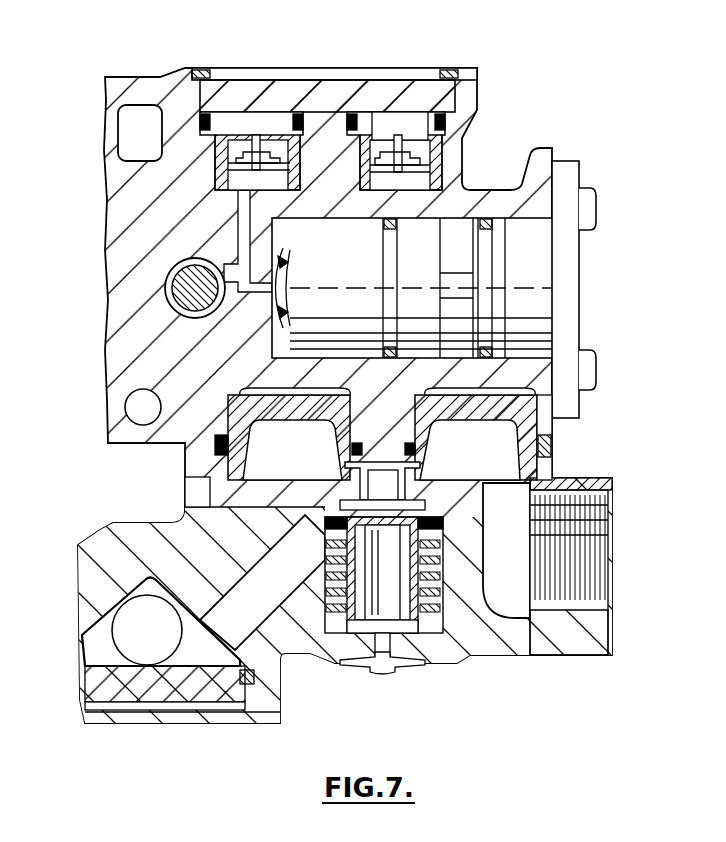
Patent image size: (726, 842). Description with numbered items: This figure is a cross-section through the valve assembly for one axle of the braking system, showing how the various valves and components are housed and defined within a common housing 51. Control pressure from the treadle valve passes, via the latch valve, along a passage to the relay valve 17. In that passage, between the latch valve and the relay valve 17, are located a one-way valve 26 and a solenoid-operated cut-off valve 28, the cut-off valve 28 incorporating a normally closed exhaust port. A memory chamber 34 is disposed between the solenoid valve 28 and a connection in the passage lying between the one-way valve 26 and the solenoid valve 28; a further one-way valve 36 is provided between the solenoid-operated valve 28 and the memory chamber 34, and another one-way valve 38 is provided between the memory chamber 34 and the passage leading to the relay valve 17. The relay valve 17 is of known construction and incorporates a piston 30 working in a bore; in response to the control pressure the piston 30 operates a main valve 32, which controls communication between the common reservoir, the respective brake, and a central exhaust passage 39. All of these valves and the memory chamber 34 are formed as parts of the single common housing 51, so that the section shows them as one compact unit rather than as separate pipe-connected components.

The relay valve 17 is at (548, 463).
The one-way valve 26 is at (185, 287).
The solenoid-operated cut-off valve 28 is at (525, 275).
The piston 30 is at (515, 415).
The main valve 32 is at (388, 578).
The memory chamber 34 is at (392, 130).
The one-way valve 36 is at (400, 160).
The one-way valve 38 is at (258, 148).
The central exhaust passage 39 is at (403, 668).
The common housing 51 is at (210, 357).